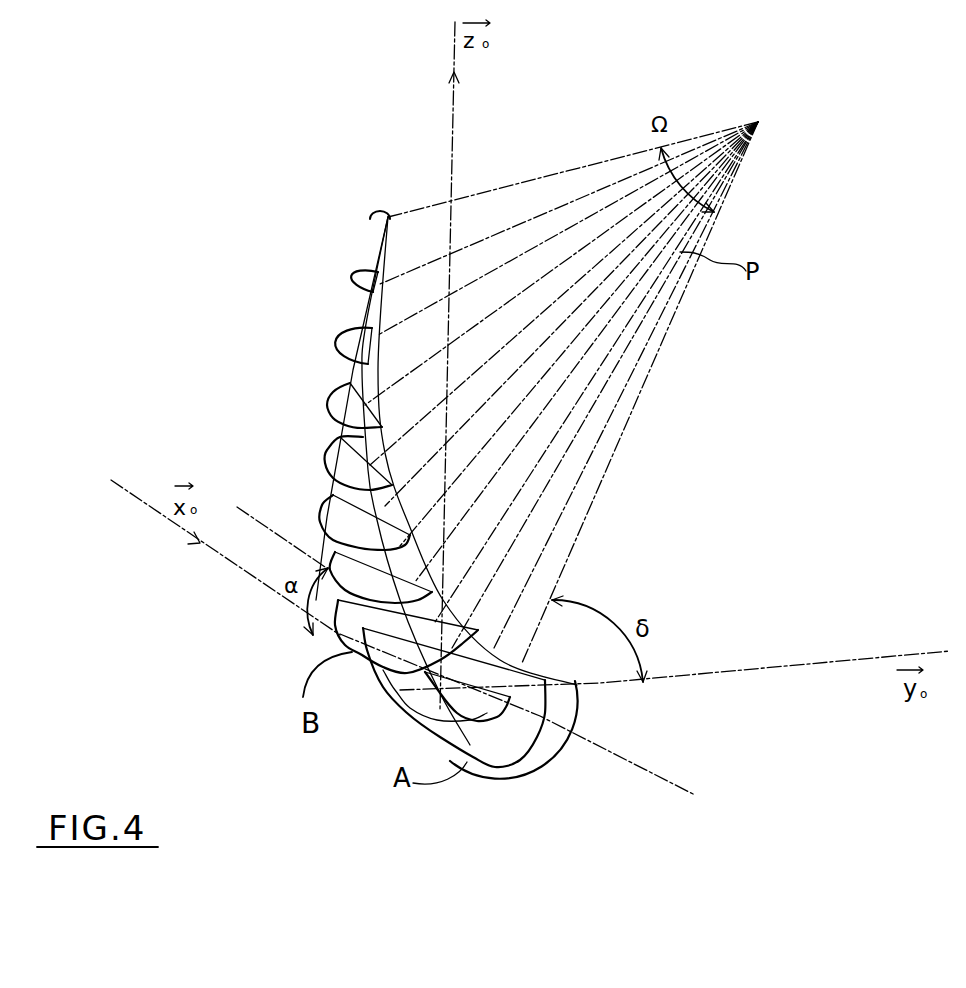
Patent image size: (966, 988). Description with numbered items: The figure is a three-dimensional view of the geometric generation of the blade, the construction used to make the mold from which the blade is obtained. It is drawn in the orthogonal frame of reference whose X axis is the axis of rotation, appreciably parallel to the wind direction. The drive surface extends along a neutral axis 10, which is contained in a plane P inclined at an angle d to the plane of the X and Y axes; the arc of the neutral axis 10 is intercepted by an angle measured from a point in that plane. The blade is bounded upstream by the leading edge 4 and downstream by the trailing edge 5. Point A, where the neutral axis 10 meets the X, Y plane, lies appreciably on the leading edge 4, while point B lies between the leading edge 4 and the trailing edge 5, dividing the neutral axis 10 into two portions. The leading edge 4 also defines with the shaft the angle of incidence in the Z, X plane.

The leading edge 4 is at (582, 710).
The trailing edge 5 is at (380, 216).
The neutral axis 10 is at (342, 435).